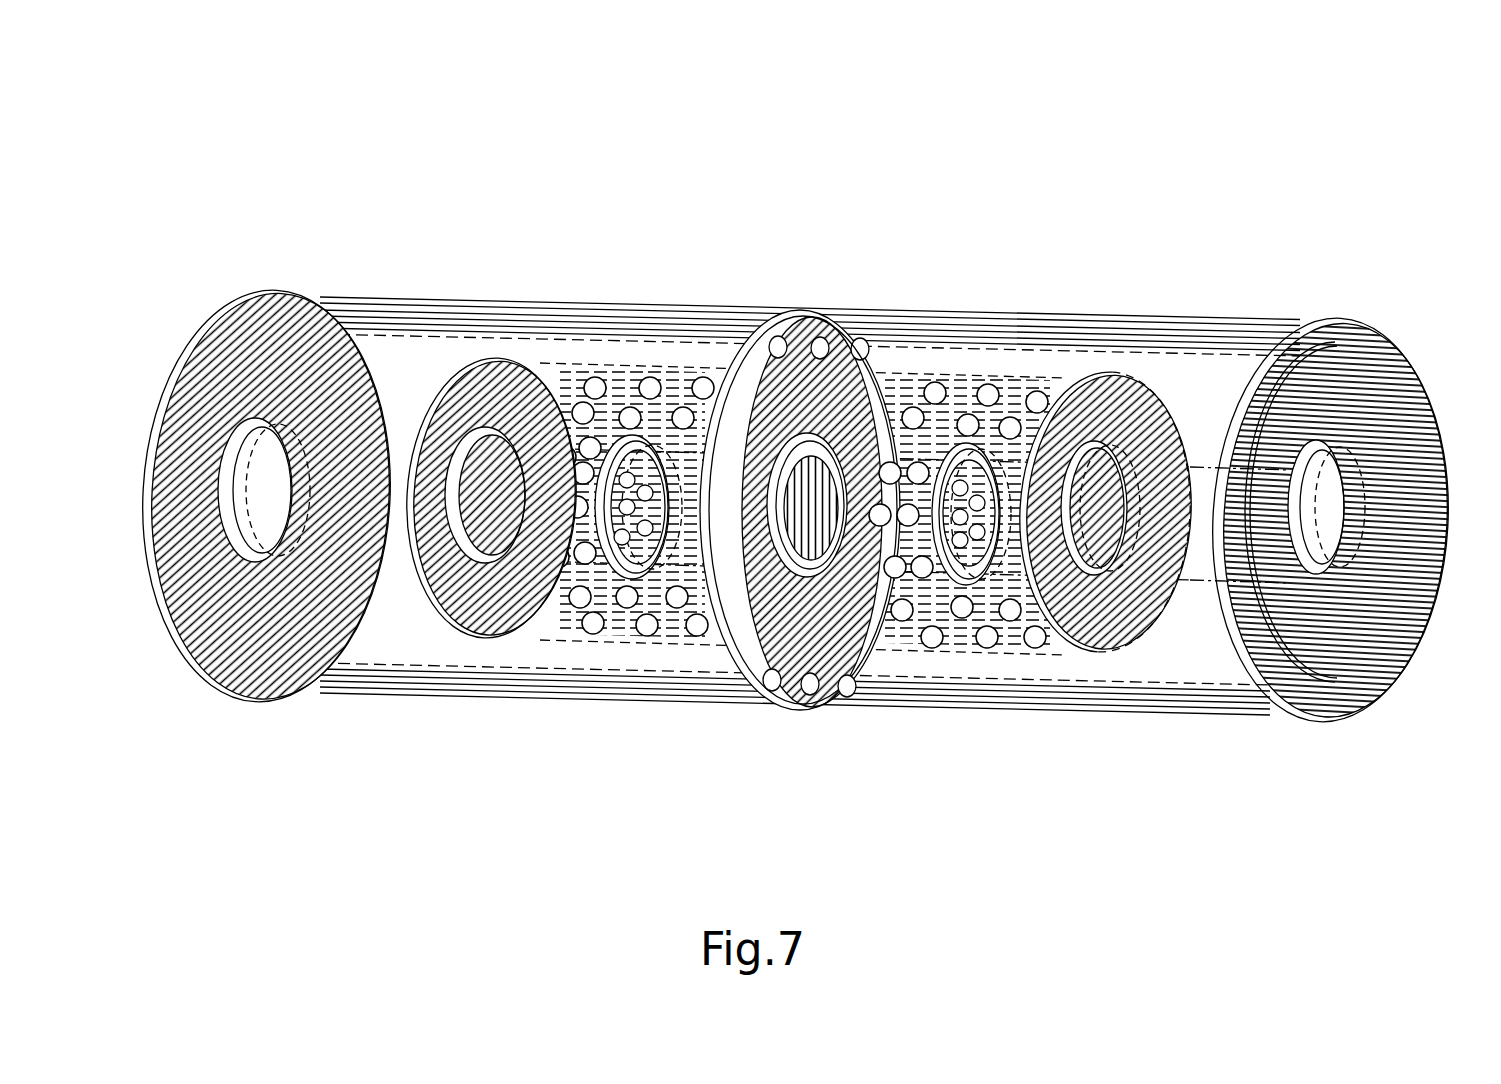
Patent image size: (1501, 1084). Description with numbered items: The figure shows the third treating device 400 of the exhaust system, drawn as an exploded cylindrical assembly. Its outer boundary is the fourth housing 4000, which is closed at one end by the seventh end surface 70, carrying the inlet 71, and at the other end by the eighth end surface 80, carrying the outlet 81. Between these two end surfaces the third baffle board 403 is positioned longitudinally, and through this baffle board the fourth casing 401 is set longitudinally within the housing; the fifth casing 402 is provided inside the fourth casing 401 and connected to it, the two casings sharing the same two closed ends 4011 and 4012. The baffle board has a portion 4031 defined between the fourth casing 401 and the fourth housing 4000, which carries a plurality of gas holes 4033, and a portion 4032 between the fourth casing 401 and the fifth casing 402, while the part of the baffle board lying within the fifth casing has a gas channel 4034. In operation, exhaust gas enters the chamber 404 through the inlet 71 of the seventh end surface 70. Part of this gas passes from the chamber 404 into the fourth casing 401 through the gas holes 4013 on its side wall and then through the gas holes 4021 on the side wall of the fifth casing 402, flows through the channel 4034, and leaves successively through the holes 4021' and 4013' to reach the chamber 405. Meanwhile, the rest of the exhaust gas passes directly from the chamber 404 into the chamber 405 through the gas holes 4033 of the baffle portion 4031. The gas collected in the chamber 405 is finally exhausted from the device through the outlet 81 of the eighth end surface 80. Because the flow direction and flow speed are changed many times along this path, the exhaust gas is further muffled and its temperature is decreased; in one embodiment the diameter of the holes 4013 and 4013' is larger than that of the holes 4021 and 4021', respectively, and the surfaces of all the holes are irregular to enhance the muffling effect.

The seventh end surface 70 is at (255, 648).
The inlet 71 is at (260, 430).
The eighth end surface 80 is at (1332, 665).
The outlet 81 is at (1332, 490).
The third treating device 400 is at (620, 785).
The fourth housing 4000 is at (452, 300).
The fourth casing 401 is at (655, 362).
The fifth casing 402 is at (600, 600).
The third baffle board 403 is at (772, 323).
The chamber 404 is at (397, 365).
The chamber 405 is at (1210, 385).
The closed end 4011 is at (458, 592).
The closed end 4012 is at (1120, 620).
The gas holes 4013 is at (701, 256).
The gas holes 4013' is at (1078, 263).
The gas holes 4021 is at (531, 656).
The gas holes 4021' is at (963, 660).
The portion of third baffle board 4031 is at (713, 535).
The portion of third baffle board 4032 is at (790, 415).
The gas holes 4033 is at (806, 690).
The gas channel 4034 is at (815, 455).